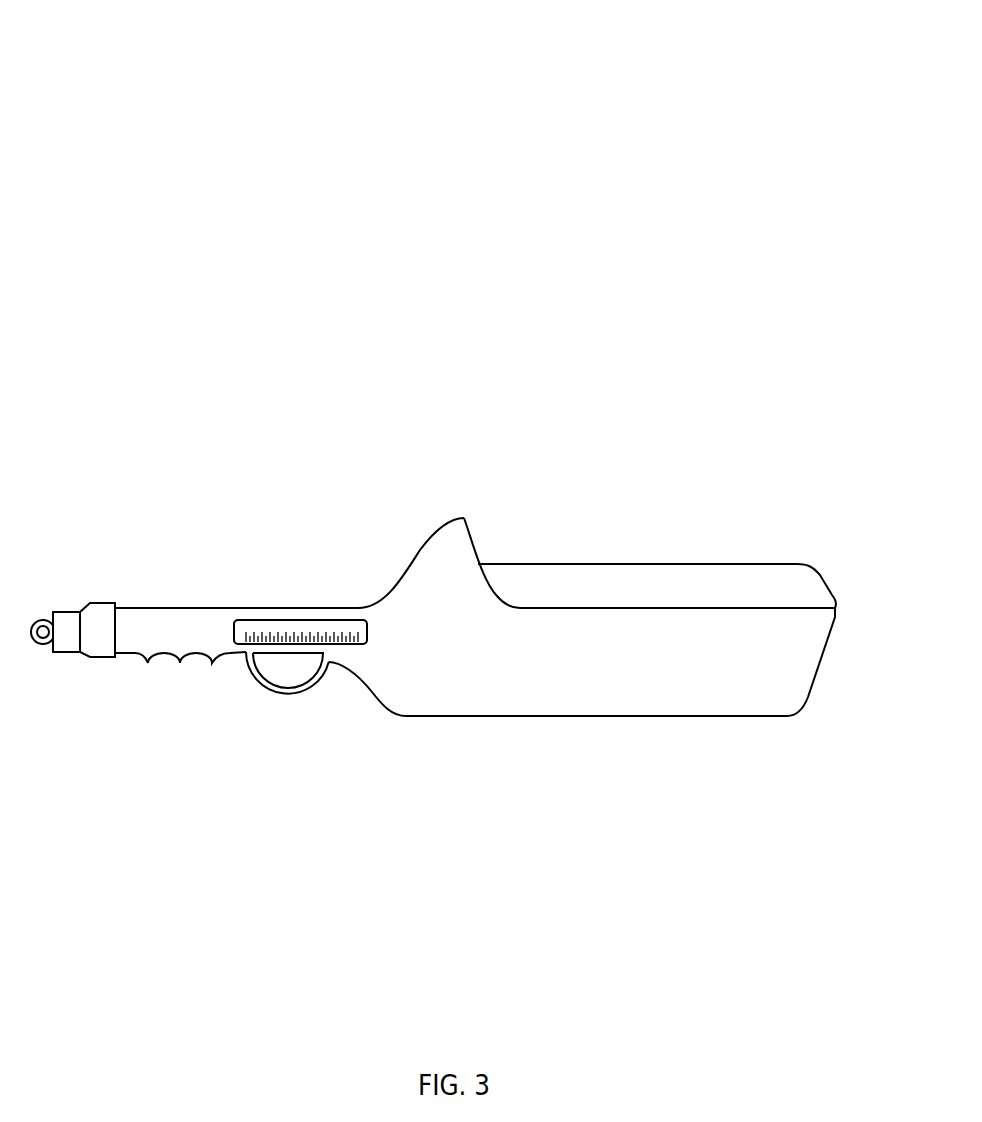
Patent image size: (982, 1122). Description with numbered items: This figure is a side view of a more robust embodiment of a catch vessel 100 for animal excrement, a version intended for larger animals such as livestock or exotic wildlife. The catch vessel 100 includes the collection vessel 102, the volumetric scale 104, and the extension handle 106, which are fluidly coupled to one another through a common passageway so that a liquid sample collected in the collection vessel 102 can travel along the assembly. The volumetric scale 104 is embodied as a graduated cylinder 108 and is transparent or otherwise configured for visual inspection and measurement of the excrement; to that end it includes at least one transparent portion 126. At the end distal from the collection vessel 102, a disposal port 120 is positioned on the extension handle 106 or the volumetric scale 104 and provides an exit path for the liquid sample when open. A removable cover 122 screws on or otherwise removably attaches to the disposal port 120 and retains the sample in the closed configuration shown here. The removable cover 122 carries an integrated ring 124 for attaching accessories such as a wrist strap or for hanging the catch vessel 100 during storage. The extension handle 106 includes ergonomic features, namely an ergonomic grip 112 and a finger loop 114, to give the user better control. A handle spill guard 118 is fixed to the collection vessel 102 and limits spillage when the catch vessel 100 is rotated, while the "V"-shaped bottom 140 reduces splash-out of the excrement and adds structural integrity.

The catch vessel 100 is at (708, 63).
The collection vessel 102 is at (789, 585).
The volumetric scale 104 is at (268, 619).
The extension handle 106 is at (187, 604).
The graduated cylinder 108 is at (323, 615).
The ergonomic grip 112 is at (182, 666).
The finger loop 114 is at (292, 697).
The handle spill guard 118 is at (463, 516).
The disposal port 120 is at (102, 659).
The removable cover 122 is at (72, 608).
The integrated ring 124 is at (42, 611).
The transparent portion 126 is at (366, 645).
The "V"-shaped bottom 140 is at (745, 719).